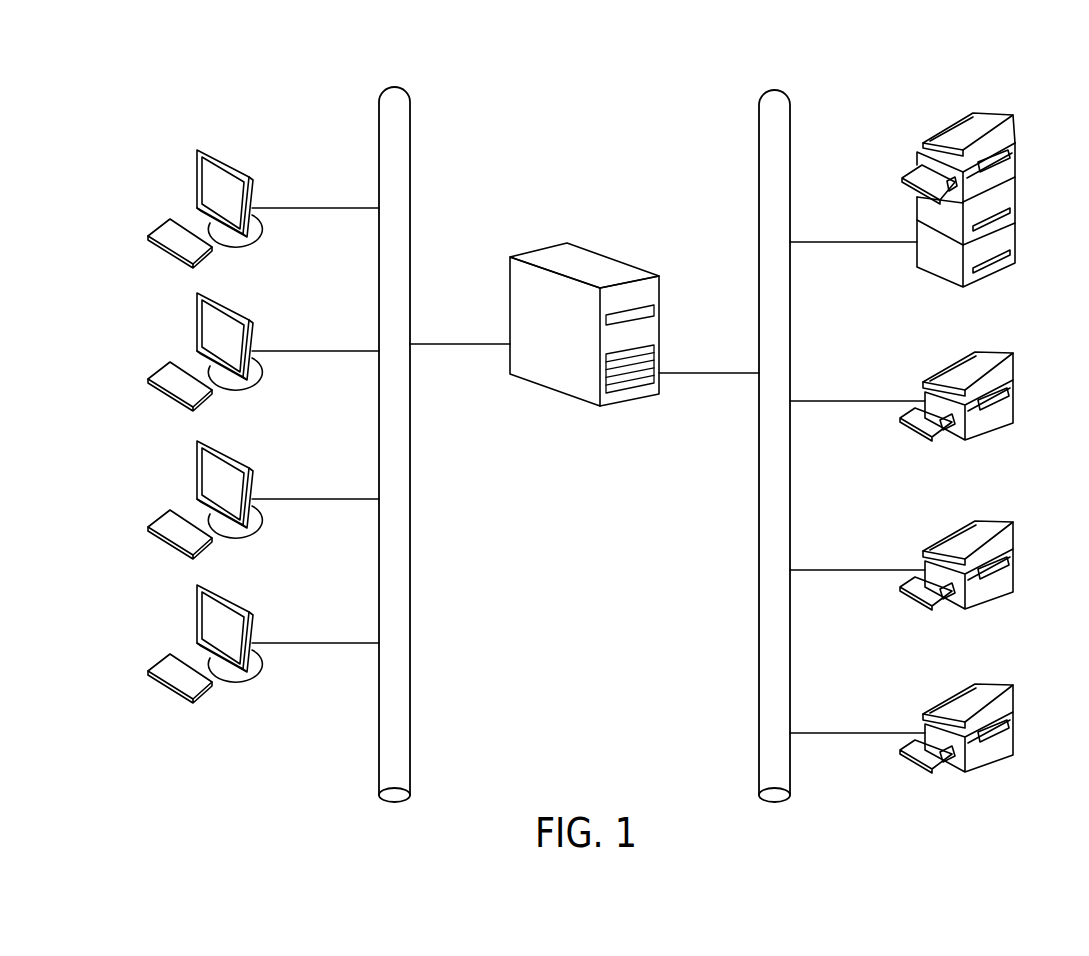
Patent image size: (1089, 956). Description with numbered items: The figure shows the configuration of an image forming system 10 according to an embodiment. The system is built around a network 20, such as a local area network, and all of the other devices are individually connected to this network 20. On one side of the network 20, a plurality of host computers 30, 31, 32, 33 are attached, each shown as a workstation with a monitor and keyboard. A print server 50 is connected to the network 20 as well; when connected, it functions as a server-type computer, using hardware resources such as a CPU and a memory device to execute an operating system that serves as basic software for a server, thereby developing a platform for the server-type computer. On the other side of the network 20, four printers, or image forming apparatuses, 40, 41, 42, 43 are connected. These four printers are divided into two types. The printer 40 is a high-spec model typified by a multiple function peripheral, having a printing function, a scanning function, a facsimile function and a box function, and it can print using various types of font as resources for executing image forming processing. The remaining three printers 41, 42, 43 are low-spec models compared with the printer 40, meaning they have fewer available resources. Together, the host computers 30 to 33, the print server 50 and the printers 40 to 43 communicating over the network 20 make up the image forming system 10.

The image forming system 10 is at (858, 52).
The network 20 is at (398, 87).
The host computer 30 is at (238, 170).
The host computer 31 is at (238, 313).
The host computer 32 is at (238, 462).
The host computer 33 is at (236, 604).
The printer 40 is at (942, 130).
The printer 41 is at (940, 372).
The printer 42 is at (938, 541).
The printer 43 is at (937, 704).
The print server 50 is at (560, 252).